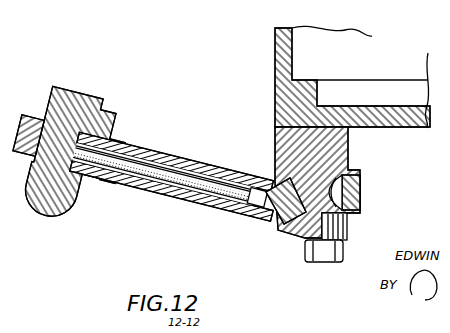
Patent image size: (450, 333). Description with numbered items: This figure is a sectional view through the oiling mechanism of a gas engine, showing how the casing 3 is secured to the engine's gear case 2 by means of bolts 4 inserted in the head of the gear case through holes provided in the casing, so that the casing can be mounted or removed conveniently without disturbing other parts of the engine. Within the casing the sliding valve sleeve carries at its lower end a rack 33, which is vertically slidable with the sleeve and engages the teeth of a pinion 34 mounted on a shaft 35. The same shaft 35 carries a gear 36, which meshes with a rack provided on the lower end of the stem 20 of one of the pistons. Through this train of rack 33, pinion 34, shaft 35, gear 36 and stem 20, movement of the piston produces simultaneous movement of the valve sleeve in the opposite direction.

The gear case 2 is at (277, 115).
The casing 3 is at (142, 188).
The bolts 4 is at (308, 250).
The stem 20 is at (68, 203).
The rack 33 is at (282, 180).
The pinion 34 is at (293, 217).
The shaft 35 is at (78, 145).
The gear 36 is at (100, 108).